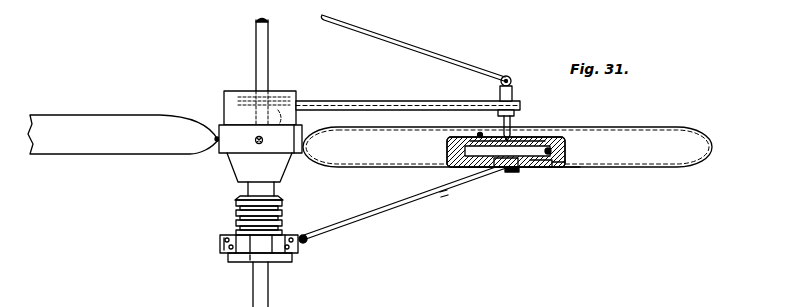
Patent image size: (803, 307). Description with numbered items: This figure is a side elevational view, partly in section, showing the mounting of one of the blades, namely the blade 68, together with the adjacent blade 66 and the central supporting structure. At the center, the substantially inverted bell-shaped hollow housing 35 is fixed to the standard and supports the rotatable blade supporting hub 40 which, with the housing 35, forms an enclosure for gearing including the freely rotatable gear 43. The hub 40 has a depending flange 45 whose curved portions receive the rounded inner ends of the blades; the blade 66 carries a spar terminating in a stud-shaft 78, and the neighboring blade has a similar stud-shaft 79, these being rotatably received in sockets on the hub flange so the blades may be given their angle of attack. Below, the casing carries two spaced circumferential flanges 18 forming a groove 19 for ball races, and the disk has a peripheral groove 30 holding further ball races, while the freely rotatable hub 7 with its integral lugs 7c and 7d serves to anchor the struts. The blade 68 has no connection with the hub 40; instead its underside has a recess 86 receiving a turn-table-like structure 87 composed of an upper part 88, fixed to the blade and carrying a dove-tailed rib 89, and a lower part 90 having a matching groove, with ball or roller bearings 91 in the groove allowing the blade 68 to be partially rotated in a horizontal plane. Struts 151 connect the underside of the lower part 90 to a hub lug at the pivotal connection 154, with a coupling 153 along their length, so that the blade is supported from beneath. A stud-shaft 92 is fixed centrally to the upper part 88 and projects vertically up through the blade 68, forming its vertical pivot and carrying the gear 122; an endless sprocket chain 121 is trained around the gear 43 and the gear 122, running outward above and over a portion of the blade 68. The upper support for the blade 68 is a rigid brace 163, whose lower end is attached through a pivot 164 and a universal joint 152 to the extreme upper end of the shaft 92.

The blade 66 is at (92, 126).
The stud-shaft 78 is at (212, 138).
The blade supporting hub 40 is at (237, 95).
The gear 43 is at (226, 98).
The depending flange 45 is at (277, 142).
The housing 35 is at (240, 160).
The stud-shaft 79 is at (262, 142).
The circumferential groove 19 is at (236, 208).
The circumferential flanges 18 is at (286, 208).
The circumferential groove 30 is at (285, 224).
The hub 7 is at (272, 260).
The lugs 7c is at (225, 238).
The lugs 7d is at (250, 262).
The pivotal connection 154 is at (308, 243).
The struts 151 is at (412, 200).
The rod coupling 153 is at (484, 172).
The recess 86 is at (447, 166).
The universal joint 152 is at (512, 174).
The lower part 90 is at (540, 170).
The turn-table-like structure 87 is at (560, 170).
The ball or roller bearings 91 is at (575, 170).
The upper part 88 is at (540, 140).
The dove-tailed rib 89 is at (575, 148).
The endless sprocket chain 121 is at (345, 101).
The stud-shaft 92 is at (525, 125).
The gear 122 is at (512, 108).
The pivot 164 is at (508, 74).
The rigid brace 163 is at (415, 48).
The blade 68 is at (683, 128).